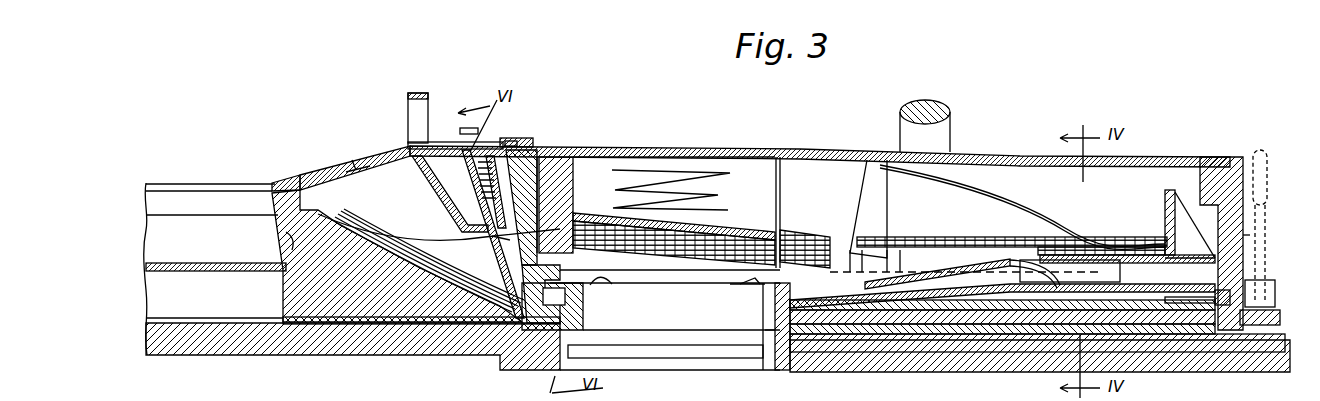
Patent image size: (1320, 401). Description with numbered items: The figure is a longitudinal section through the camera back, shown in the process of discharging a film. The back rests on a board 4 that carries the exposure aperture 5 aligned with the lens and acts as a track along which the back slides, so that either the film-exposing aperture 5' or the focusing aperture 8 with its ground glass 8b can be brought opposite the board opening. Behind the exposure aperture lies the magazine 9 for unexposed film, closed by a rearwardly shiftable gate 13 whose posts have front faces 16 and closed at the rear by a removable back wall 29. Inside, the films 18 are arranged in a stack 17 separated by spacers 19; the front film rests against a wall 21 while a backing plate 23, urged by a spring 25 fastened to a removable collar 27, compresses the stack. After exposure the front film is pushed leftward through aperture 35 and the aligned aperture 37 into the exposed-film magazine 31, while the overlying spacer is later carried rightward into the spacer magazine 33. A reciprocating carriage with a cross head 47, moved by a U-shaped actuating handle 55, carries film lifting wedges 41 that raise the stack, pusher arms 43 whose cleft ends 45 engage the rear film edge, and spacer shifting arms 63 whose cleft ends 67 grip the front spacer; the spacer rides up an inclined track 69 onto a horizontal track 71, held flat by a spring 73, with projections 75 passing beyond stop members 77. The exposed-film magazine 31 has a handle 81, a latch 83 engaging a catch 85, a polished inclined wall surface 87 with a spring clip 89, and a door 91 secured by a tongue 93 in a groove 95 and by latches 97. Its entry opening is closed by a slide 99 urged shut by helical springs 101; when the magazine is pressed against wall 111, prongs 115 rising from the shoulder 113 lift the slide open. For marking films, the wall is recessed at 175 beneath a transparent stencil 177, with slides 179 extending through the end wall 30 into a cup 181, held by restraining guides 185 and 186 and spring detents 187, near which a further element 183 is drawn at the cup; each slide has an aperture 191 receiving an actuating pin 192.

The board 4 is at (478, 356).
The exposure aperture 5 is at (665, 369).
The film-exposing aperture 5' is at (712, 338).
The focusing aperture 8 is at (263, 307).
The ground glass 8b is at (208, 272).
The magazine 9 is at (753, 176).
The gate 13 is at (558, 156).
The front faces 16 is at (425, 285).
The stack 17 is at (752, 226).
The films 18 is at (745, 285).
The spacers 19 is at (813, 238).
The wall 21 is at (604, 285).
The backing plate 23 is at (605, 216).
The spring 25 is at (618, 172).
The collar 27 is at (708, 148).
The back wall 29 is at (658, 148).
The end wall 30 is at (1215, 233).
The exposed-film magazine 31 is at (388, 141).
The spacer magazine 33 is at (1160, 179).
The aperture 35 is at (513, 285).
The aperture 37 is at (510, 273).
The film lifting wedges 41 is at (748, 270).
The pusher arms 43 is at (740, 290).
The cleft ends 45 is at (735, 300).
The cross head 47 is at (1097, 294).
The actuating handle 55 is at (940, 100).
The spacer shifting arms 63 is at (990, 245).
The cleft ends 67 is at (1020, 240).
The inclined track 69 is at (915, 240).
The horizontal track 71 is at (1132, 245).
The spring 73 is at (1058, 215).
The projections 75 is at (1085, 238).
The stop members 77 is at (1165, 197).
The handle 81 is at (420, 92).
The latch 83 is at (480, 140).
The catch 85 is at (522, 139).
The inclined wall surface 87 is at (330, 222).
The spring clip 89 is at (397, 235).
The door 91 is at (290, 182).
The tongue 93 is at (283, 222).
The groove 95 is at (293, 240).
The latches 97 is at (350, 162).
The slide 99 is at (480, 201).
The helical springs 101 is at (470, 180).
The wall 111 is at (511, 140).
The shoulder 113 is at (484, 230).
The prongs 115 is at (480, 192).
The recess 175 is at (775, 326).
The stencil 177 is at (757, 292).
The slides 179 is at (935, 298).
The cup 181 is at (1258, 300).
The block 183 is at (1211, 291).
The restraining guide 185 is at (997, 286).
The restraining guide 186 is at (1185, 297).
The spring detents 187 is at (1280, 318).
The aperture 191 is at (1267, 246).
The actuating pin 192 is at (1250, 212).